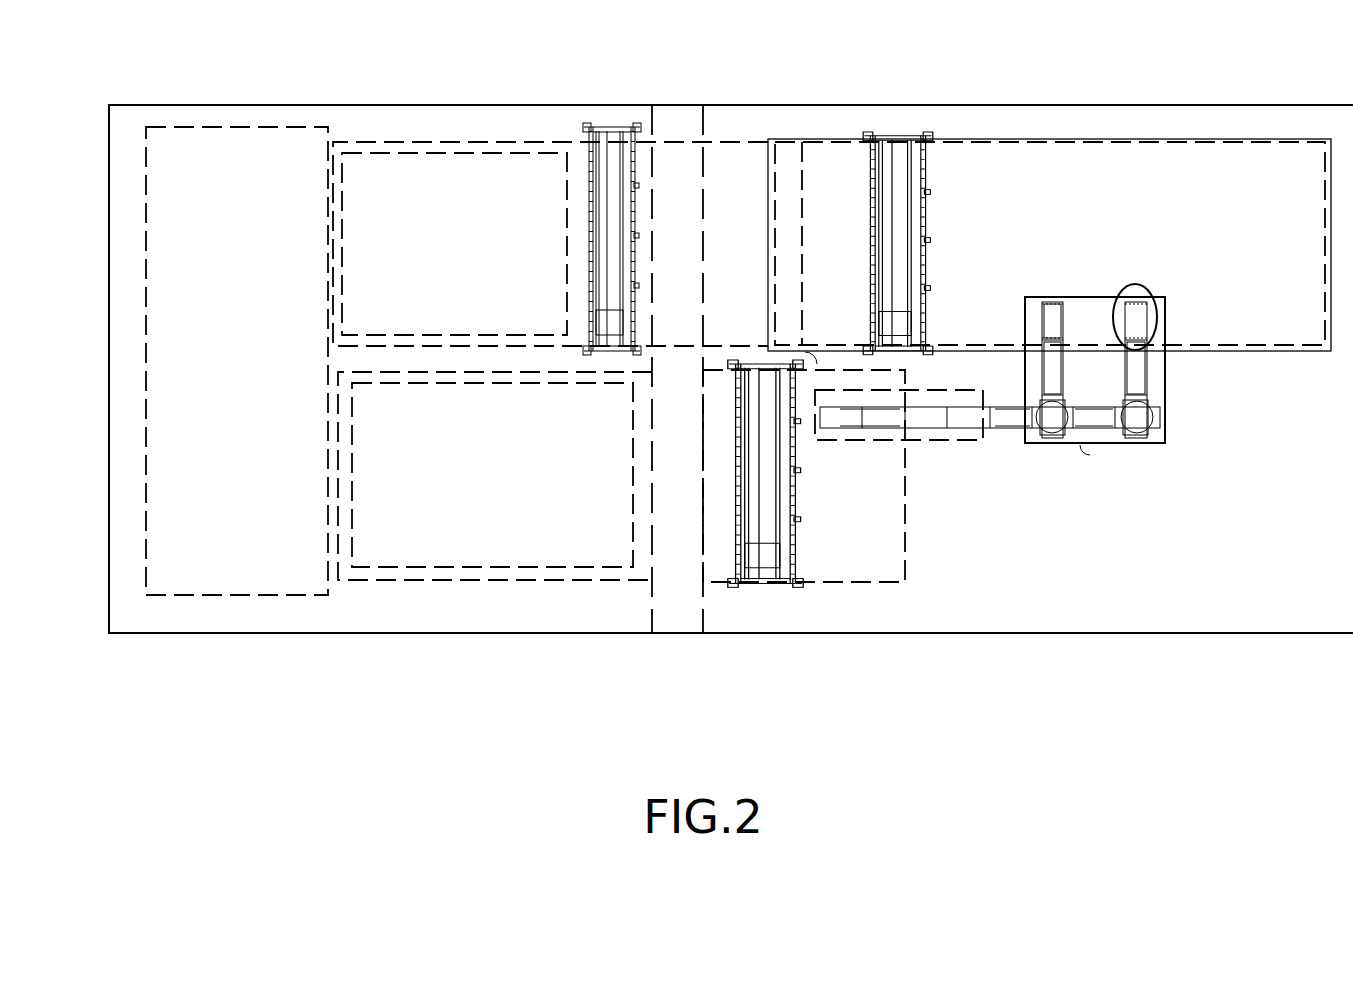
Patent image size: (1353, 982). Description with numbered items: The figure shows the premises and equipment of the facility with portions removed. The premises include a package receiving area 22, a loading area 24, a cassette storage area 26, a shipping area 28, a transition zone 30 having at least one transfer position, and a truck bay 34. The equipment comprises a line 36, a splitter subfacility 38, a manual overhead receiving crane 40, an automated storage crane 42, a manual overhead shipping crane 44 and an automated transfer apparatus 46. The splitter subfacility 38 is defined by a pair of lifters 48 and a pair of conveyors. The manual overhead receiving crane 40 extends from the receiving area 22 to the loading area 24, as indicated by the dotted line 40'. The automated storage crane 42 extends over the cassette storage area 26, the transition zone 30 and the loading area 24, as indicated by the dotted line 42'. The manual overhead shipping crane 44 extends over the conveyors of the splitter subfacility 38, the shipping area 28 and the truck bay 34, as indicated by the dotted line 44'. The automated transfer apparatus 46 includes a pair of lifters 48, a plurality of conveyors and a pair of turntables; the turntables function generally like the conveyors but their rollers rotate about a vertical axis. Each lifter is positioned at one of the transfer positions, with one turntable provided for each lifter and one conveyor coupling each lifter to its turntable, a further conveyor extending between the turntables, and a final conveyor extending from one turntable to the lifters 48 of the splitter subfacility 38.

The package receiving area 22 is at (394, 252).
The loading area 24 is at (792, 213).
The cassette storage area 26 is at (1070, 184).
The shipping area 28 is at (454, 494).
The transition zone 30 is at (1094, 322).
The truck bay 34 is at (660, 477).
The line 36 is at (222, 322).
The splitter subfacility 38 is at (838, 438).
The manual overhead receiving crane 40 is at (568, 239).
The dotted line 40' is at (550, 190).
The automated storage crane 42 is at (876, 243).
The dotted line 42' is at (1306, 378).
The manual overhead shipping crane 44 is at (806, 524).
The dotted line 44' is at (866, 496).
The automated transfer apparatus 46 is at (1025, 322).
The lifter 48 is at (923, 415).